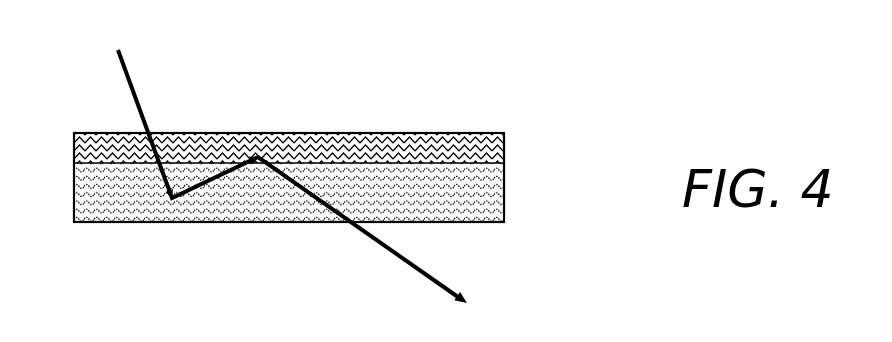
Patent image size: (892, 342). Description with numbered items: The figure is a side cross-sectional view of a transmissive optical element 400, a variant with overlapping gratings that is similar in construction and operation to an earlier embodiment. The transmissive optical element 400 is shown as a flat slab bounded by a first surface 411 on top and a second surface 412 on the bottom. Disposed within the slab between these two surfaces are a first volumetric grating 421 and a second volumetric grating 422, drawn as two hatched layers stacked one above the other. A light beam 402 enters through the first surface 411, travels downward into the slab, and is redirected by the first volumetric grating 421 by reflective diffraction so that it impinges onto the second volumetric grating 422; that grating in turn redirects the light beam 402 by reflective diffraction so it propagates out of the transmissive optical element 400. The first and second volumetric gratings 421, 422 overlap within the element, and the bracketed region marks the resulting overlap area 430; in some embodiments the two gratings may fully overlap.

The transmissive optical element 400 is at (323, 156).
The light beam 402 is at (128, 88).
The first surface 411 is at (222, 133).
The second surface 412 is at (215, 224).
The first volumetric grating 421 is at (279, 224).
The second volumetric grating 422 is at (322, 133).
The overlap area 430 is at (511, 162).